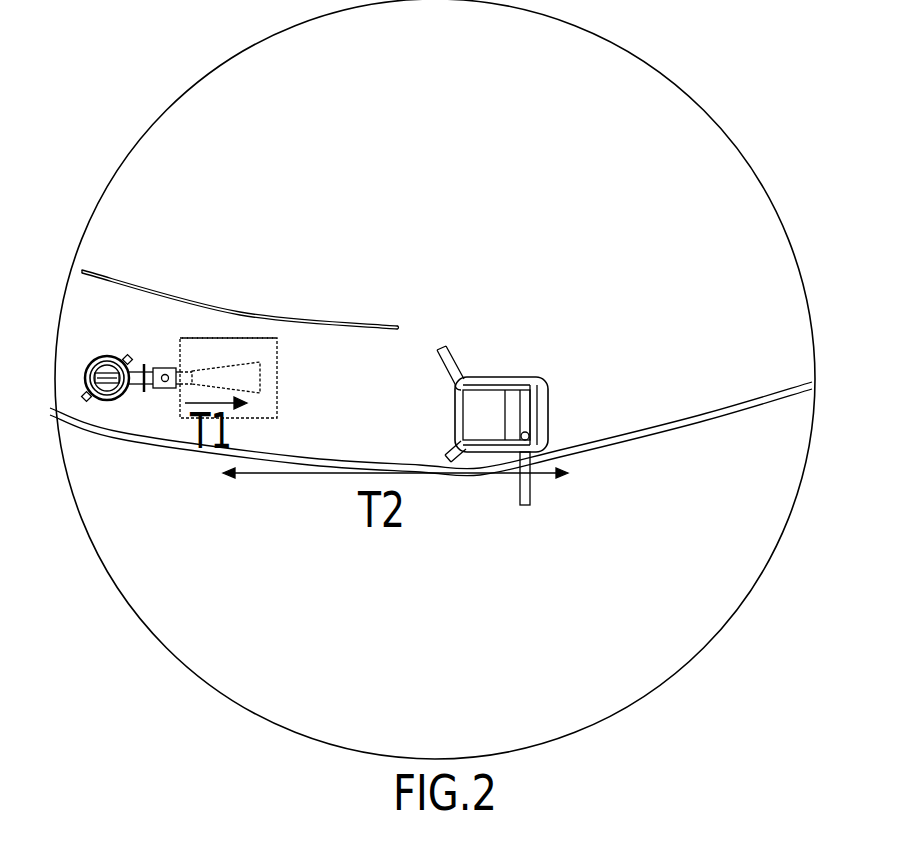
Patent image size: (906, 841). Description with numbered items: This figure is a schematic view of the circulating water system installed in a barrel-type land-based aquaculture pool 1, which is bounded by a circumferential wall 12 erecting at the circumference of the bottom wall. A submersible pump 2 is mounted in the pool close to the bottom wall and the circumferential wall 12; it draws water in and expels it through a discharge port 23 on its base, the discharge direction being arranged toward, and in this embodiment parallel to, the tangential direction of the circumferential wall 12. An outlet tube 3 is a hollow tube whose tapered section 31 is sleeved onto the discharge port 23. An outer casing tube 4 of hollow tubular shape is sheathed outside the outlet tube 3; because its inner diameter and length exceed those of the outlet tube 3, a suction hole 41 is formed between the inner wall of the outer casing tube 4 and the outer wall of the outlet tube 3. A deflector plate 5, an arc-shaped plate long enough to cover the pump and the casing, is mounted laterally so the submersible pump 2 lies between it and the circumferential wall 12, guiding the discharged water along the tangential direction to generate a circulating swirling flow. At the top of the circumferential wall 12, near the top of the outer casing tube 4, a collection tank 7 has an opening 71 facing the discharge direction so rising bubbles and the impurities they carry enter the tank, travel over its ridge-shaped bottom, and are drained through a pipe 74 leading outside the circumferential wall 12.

The land-based aquaculture pool 1 is at (680, 116).
The submersible pump 2 is at (88, 366).
The outlet tube 3 is at (262, 378).
The outer casing tube 4 is at (268, 337).
The deflector plate 5 is at (213, 302).
The collection tank 7 is at (491, 405).
The circumferential wall 12 is at (635, 442).
The discharge port 23 is at (150, 387).
The tapered section 31 is at (197, 378).
The suction hole 41 is at (236, 352).
The opening 71 is at (462, 418).
The pipe 74 is at (527, 495).